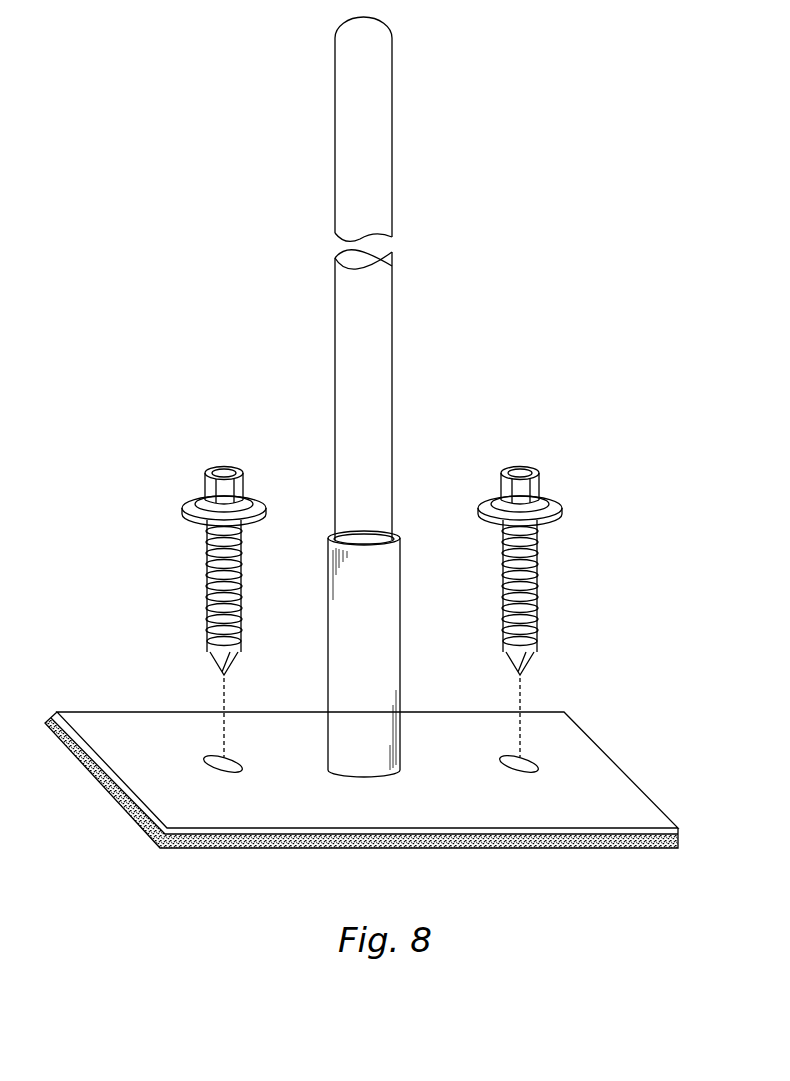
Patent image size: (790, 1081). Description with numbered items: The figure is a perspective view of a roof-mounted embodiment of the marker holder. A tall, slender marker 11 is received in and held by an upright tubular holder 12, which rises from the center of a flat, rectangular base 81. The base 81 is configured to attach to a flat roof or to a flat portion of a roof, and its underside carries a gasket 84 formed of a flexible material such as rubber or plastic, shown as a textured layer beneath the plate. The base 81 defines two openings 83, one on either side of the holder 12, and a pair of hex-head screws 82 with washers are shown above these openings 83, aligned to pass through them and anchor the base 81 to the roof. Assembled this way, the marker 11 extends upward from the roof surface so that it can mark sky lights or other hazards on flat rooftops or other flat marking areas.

The marker 11 is at (392, 318).
The holder 12 is at (342, 657).
The base 81 is at (598, 773).
The screws 82 is at (203, 582).
The openings 83 is at (210, 755).
The gasket 84 is at (533, 852).